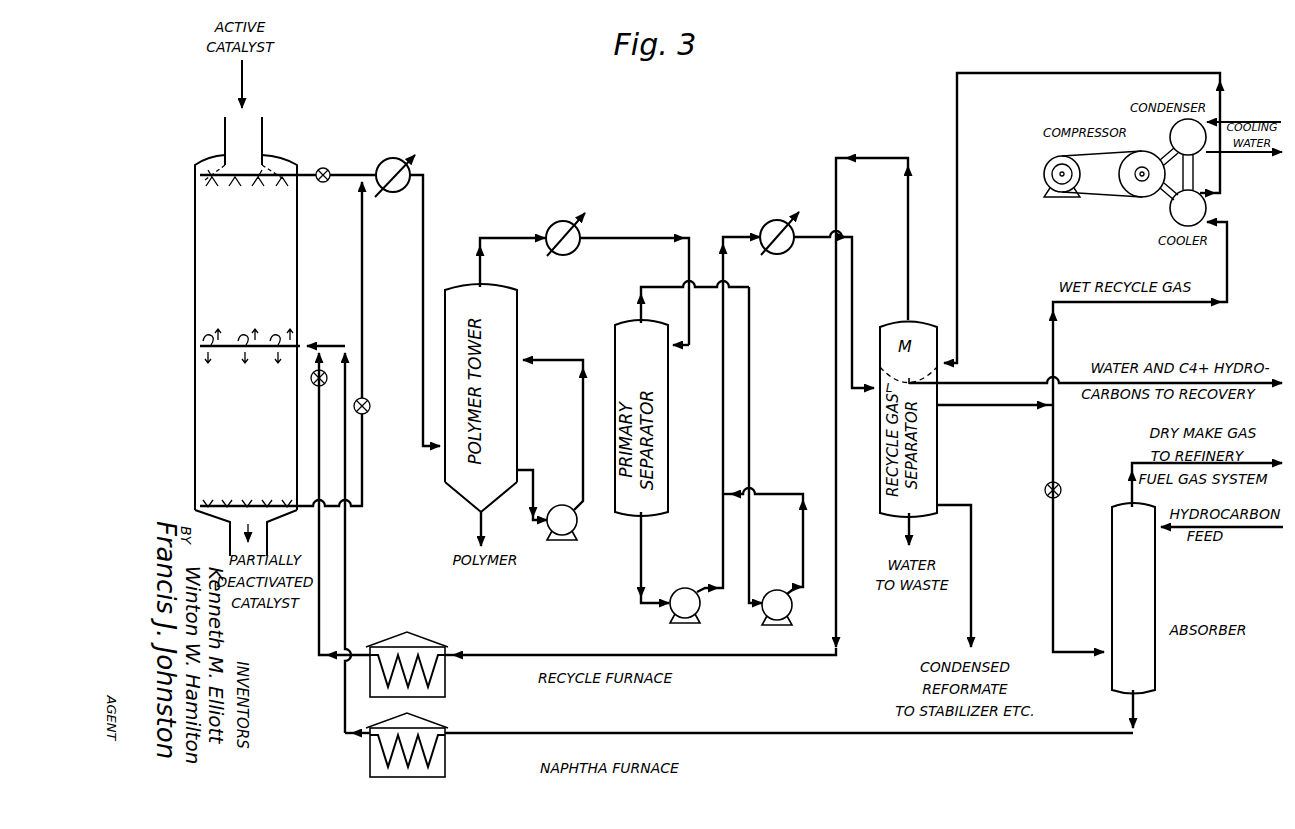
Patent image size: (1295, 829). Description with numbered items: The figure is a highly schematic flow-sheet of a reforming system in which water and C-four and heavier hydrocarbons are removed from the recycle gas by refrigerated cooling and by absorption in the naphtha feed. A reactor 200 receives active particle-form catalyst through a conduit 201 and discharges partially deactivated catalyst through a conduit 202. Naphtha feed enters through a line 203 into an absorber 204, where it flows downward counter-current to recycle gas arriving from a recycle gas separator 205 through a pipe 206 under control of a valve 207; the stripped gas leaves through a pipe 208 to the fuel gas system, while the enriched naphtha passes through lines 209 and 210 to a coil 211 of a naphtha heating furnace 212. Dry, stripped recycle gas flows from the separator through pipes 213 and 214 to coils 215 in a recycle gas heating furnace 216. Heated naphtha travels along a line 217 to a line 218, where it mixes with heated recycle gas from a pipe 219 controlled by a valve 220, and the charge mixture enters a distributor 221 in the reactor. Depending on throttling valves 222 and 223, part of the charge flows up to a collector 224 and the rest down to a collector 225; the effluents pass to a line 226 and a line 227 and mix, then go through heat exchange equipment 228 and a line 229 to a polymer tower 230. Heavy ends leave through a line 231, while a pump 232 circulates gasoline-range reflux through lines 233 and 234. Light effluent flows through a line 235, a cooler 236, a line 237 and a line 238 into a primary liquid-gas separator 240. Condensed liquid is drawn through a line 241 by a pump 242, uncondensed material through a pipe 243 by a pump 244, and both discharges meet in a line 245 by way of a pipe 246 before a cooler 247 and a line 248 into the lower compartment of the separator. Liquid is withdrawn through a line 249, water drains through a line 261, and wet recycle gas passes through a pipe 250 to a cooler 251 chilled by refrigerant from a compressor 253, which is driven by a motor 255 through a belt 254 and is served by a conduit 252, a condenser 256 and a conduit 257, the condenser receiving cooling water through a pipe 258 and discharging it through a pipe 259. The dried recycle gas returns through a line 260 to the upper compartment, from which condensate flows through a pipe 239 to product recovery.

The reactor 200 is at (195, 281).
The conduit 201 is at (263, 134).
The conduit 202 is at (268, 534).
The line 203 is at (1247, 541).
The absorber 204 is at (1145, 586).
The recycle gas separator 205 is at (940, 444).
The pipe 206 is at (1052, 542).
The valve 207 is at (1044, 491).
The pipe 208 is at (1128, 480).
The line 209 is at (1140, 708).
The line 210 is at (696, 736).
The coil 211 is at (370, 745).
The naphtha heating furnace 212 is at (370, 772).
The pipe 213 is at (834, 325).
The pipe 214 is at (698, 660).
The coils 215 is at (382, 670).
The recycle gas heating furnace 216 is at (438, 697).
The line 217 is at (347, 461).
The line 218 is at (327, 343).
The pipe 219 is at (318, 633).
The valve 220 is at (311, 380).
The distributor 221 is at (230, 352).
The throttling valve 222 is at (326, 168).
The throttling valve 223 is at (368, 398).
The collector 224 is at (248, 185).
The collector 225 is at (233, 502).
The line 226 is at (368, 160).
The line 227 is at (360, 288).
The heat exchange equipment 228 is at (393, 197).
The line 229 is at (423, 268).
The polymer tower 230 is at (510, 306).
The line 231 is at (479, 520).
The pump 232 is at (575, 522).
The line 233 is at (535, 482).
The line 234 is at (582, 393).
The line 235 is at (505, 238).
The cooler 236 is at (566, 218).
The line 237 is at (638, 238).
The line 238 is at (698, 350).
The pipe 239 is at (1012, 383).
The primary liquid-gas separator 240 is at (615, 331).
The line 241 is at (640, 580).
The pump 242 is at (681, 588).
The pipe 243 is at (751, 412).
The pump 244 is at (775, 615).
The line 245 is at (732, 236).
The pipe 246 is at (767, 494).
The cooler 247 is at (774, 217).
The line 248 is at (803, 247).
The line 249 is at (972, 604).
The pipe 250 is at (1055, 334).
The cooler 251 is at (1188, 208).
The conduit 252 is at (1158, 200).
The compressor 253 is at (1165, 150).
The belt 254 is at (1102, 194).
The motor 255 is at (1044, 175).
The condenser 256 is at (1188, 137).
The conduit 257 is at (1196, 178).
The pipe 258 is at (1243, 121).
The pipe 259 is at (1236, 156).
The line 260 is at (1073, 72).
The line 261 is at (914, 529).